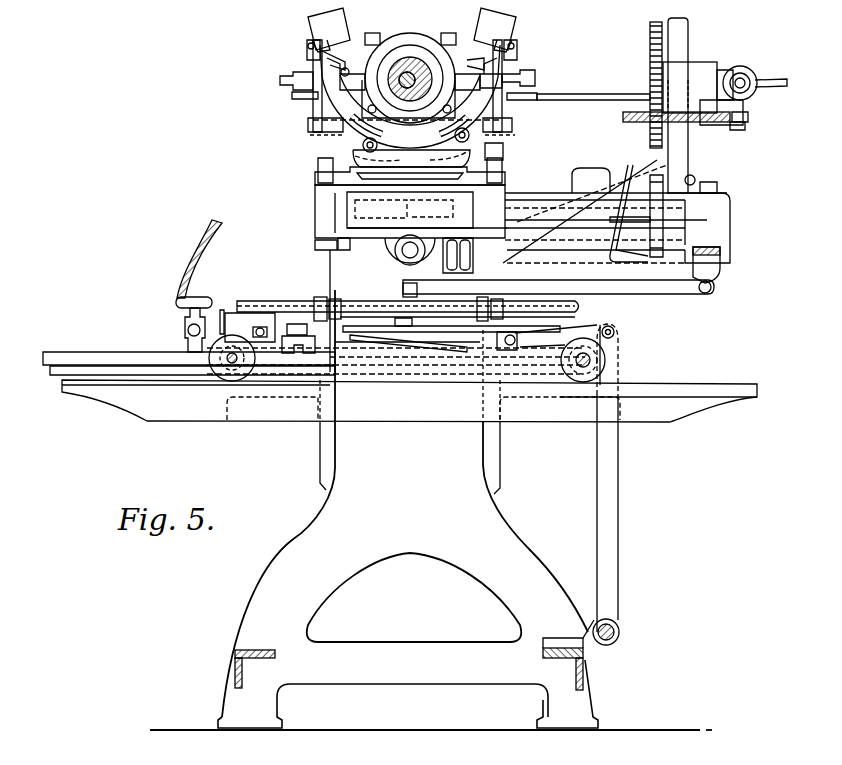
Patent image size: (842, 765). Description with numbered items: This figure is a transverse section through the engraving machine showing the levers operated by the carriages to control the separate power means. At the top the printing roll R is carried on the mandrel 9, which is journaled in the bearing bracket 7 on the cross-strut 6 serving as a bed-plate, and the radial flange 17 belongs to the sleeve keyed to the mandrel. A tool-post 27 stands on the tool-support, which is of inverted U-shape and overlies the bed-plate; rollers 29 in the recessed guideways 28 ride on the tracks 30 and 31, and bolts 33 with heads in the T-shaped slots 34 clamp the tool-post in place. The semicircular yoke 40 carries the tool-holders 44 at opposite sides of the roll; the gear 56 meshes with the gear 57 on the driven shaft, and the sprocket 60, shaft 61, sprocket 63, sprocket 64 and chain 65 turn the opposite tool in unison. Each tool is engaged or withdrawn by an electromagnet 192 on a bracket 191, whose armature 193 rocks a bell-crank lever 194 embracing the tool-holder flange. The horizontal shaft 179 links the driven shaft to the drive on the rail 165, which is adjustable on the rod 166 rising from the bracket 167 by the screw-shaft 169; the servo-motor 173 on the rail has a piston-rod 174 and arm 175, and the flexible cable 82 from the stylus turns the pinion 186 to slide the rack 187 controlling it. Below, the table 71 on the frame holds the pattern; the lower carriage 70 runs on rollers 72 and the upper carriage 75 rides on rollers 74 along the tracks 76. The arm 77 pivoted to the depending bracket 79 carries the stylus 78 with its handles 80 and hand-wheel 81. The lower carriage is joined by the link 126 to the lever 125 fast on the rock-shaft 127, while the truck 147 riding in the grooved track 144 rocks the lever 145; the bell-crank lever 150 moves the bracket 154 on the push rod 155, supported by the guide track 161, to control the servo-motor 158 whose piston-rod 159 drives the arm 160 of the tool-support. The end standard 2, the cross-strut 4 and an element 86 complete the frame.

The end standard 2 is at (300, 545).
The cross-strut 4 is at (268, 650).
The cross-strut 6 is at (377, 213).
The bearing bracket 7 is at (318, 108).
The mandrel 9 is at (398, 62).
The radial flange 17 is at (415, 40).
The printing roll R is at (427, 57).
The tool-post 27 is at (345, 150).
The recessed guideway 28 is at (320, 208).
The roller 29 is at (318, 222).
The track 30 is at (316, 191).
The track 31 is at (330, 240).
The bolt 33 is at (495, 150).
The T-shaped slot 34 is at (316, 174).
The yoke 40 is at (490, 124).
The tool-holder 44 is at (280, 80).
The gear 56 is at (508, 78).
The gear 57 is at (508, 100).
The sprocket 60 is at (498, 133).
The shaft 61 is at (310, 140).
The sprocket 63 is at (308, 124).
The sprocket 64 is at (315, 60).
The chain 65 is at (292, 96).
The carriage 70 is at (473, 363).
The table 71 is at (88, 362).
The roller 72 is at (222, 372).
The roller 74 is at (330, 300).
The carriage 75 is at (437, 318).
The track 76 is at (350, 322).
The arm 77 is at (220, 310).
The stylus 78 is at (196, 348).
The depending bracket 79 is at (272, 372).
The handle 80 is at (185, 338).
The hand-wheel 81 is at (182, 300).
The flexible cable 82 is at (220, 224).
The clamp 86 is at (295, 330).
The lever 125 is at (618, 518).
The link 126 is at (595, 327).
The rock-shaft 127 is at (620, 634).
The grooved track 144 is at (292, 310).
The lever 145 is at (713, 290).
The truck 147 is at (402, 303).
The bell-crank lever 150 is at (548, 215).
The bracket 154 is at (612, 250).
The push rod 155 is at (404, 209).
The servo-motor 158 is at (400, 258).
The piston-rod 159 is at (355, 252).
The arm 160 is at (318, 236).
The guide track 161 is at (690, 256).
The rail 165 is at (688, 68).
The rod 166 is at (690, 161).
The bracket 167 is at (700, 177).
The screw-shaft 169 is at (652, 46).
The servo-motor 173 is at (752, 75).
The piston-rod 174 is at (752, 95).
The arm 175 is at (733, 68).
The horizontal shaft 179 is at (606, 90).
The pinion 186 is at (742, 126).
The rack 187 is at (750, 118).
The bracket 191 is at (515, 42).
The electromagnet 192 is at (308, 18).
The armature 193 is at (312, 40).
The bell-crank lever 194 is at (328, 58).